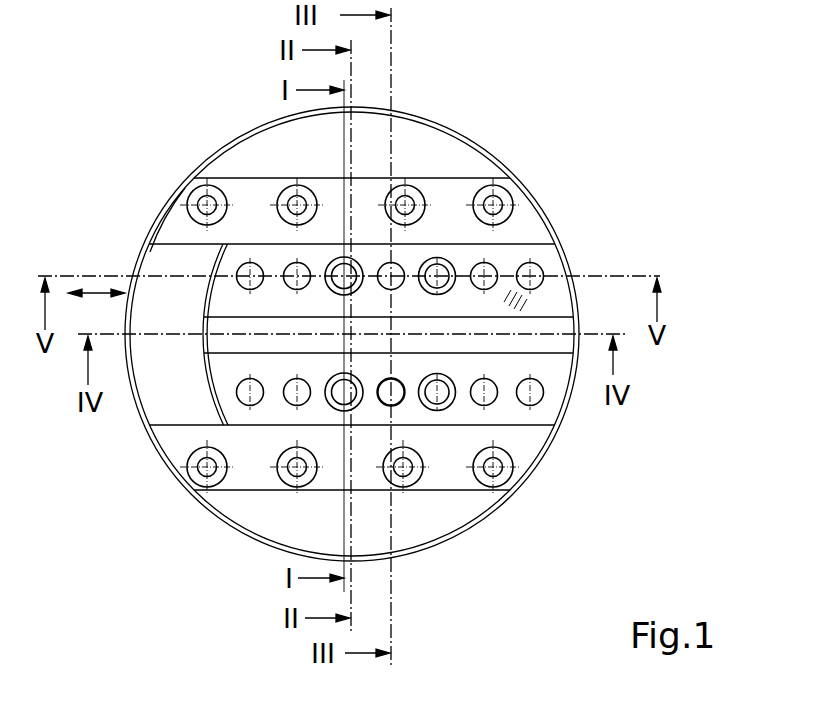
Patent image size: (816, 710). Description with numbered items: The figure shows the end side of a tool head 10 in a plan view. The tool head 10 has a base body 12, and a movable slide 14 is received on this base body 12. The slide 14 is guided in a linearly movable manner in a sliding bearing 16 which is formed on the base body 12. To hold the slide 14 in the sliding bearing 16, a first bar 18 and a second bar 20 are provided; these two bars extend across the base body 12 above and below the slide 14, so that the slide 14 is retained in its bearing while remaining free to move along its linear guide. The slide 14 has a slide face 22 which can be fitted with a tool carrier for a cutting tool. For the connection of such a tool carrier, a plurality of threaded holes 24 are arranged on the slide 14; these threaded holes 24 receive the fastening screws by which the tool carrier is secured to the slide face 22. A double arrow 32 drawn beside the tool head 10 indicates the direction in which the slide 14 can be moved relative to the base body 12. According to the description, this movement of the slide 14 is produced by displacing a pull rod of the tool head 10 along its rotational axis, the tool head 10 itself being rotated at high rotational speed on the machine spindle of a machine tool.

The tool head 10 is at (578, 95).
The base body 12 is at (248, 540).
The slide 14 is at (553, 299).
The sliding bearing 16 is at (136, 251).
The first bar 18 is at (172, 218).
The second bar 20 is at (178, 440).
The slide face 22 is at (517, 305).
The threaded holes 24 is at (243, 286).
The double arrow 32 is at (97, 292).